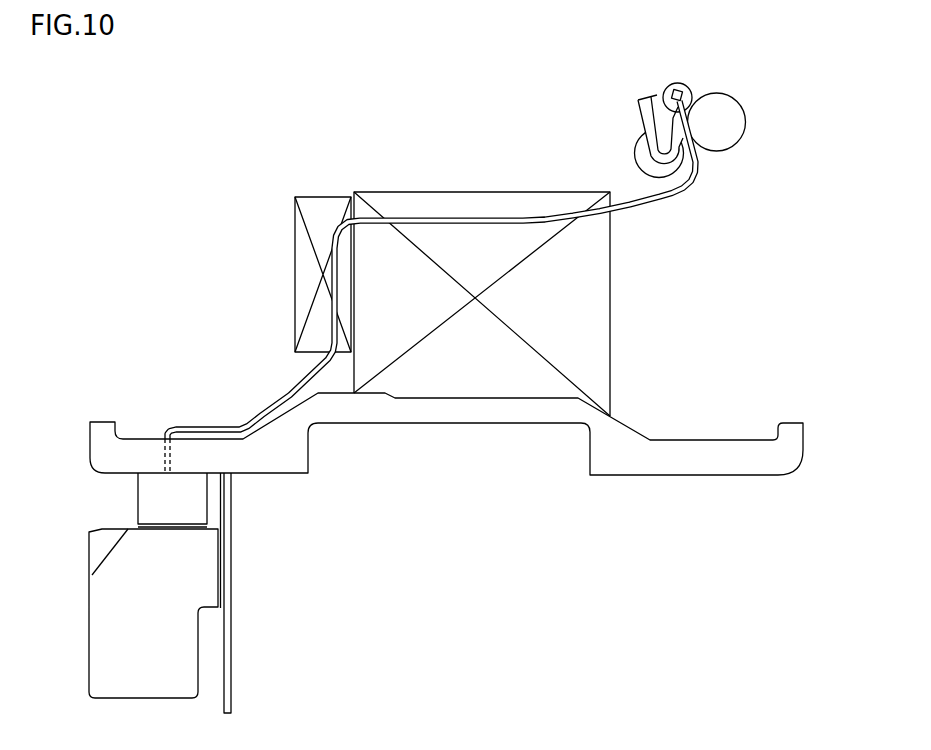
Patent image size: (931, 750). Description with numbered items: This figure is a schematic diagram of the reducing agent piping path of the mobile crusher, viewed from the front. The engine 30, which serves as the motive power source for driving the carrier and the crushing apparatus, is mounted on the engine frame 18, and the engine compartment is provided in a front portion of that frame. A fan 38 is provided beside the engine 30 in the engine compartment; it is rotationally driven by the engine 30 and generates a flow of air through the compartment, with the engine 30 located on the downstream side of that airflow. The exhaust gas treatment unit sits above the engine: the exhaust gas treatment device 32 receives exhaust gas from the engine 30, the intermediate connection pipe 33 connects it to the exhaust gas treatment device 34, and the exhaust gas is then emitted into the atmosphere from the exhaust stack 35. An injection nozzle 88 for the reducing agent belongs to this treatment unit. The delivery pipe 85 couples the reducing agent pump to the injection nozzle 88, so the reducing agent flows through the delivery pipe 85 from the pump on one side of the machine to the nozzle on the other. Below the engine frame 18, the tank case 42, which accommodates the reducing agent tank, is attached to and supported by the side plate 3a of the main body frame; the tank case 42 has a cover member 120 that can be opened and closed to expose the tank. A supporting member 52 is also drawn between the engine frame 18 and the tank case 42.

The delivery pipe 85 is at (444, 217).
The injection nozzle 88 is at (673, 86).
The intermediate connection pipe 33 is at (690, 87).
The exhaust gas treatment device 32 is at (727, 123).
The exhaust stack 35 is at (652, 115).
The exhaust gas treatment device 34 is at (642, 152).
The fan 38 is at (306, 271).
The engine 30 is at (571, 300).
The engine frame 18 is at (608, 455).
The support member 52 is at (152, 502).
The cover member 120 is at (103, 547).
The side plate 3a is at (227, 552).
The tank case 42 is at (117, 627).